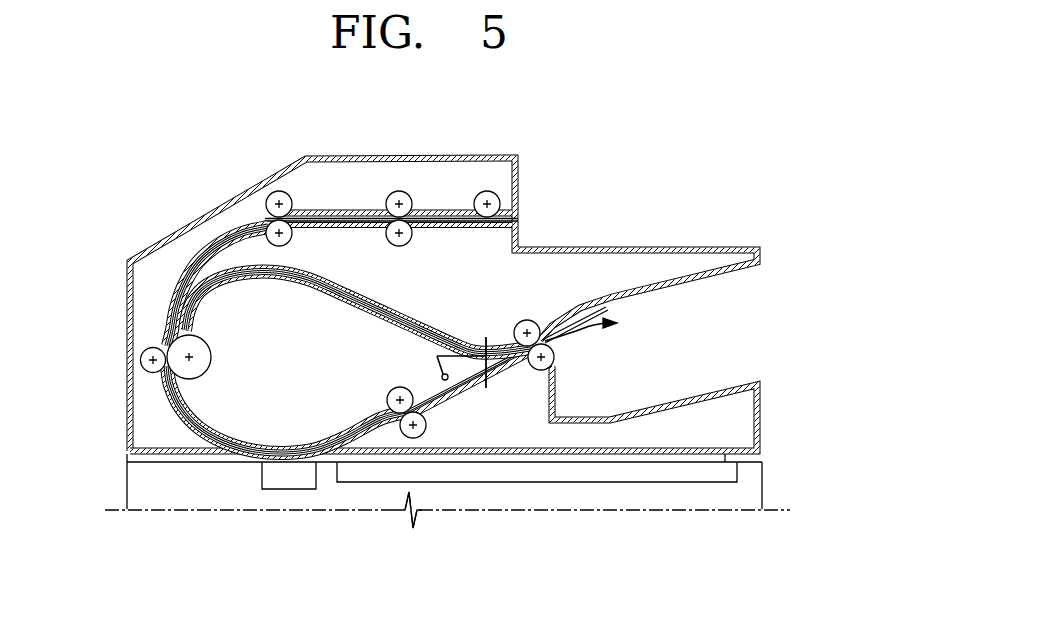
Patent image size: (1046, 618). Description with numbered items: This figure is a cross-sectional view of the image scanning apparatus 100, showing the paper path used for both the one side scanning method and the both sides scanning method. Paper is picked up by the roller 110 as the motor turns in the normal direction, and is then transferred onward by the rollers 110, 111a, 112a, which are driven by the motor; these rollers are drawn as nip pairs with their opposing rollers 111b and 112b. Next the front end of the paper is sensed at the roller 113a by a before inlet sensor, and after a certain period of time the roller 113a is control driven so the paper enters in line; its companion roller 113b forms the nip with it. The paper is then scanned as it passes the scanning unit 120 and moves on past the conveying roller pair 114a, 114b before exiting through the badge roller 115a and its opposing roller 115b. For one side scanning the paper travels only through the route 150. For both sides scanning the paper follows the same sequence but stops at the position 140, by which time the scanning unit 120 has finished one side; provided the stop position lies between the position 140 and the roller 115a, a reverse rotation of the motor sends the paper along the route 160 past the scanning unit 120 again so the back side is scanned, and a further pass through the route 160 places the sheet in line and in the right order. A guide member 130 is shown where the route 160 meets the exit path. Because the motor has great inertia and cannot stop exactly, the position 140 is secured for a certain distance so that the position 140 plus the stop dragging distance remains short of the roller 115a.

The image scanning apparatus 100 is at (437, 156).
The roller 110 is at (487, 191).
The roller 111a is at (393, 191).
The feed roller 111b is at (408, 244).
The roller 112a is at (270, 192).
The transfer roller 112b is at (289, 243).
The roller 113a is at (143, 352).
The reverse roller 113b is at (211, 355).
The conveying roller 114a is at (387, 398).
The conveying roller 114b is at (426, 426).
The badge roller 115a is at (537, 322).
The discharge roller 115b is at (555, 355).
The scanning unit 120 is at (288, 490).
The guide flap 130 is at (436, 357).
The position 140 is at (490, 385).
The route 150 is at (220, 226).
The route 160 is at (357, 303).